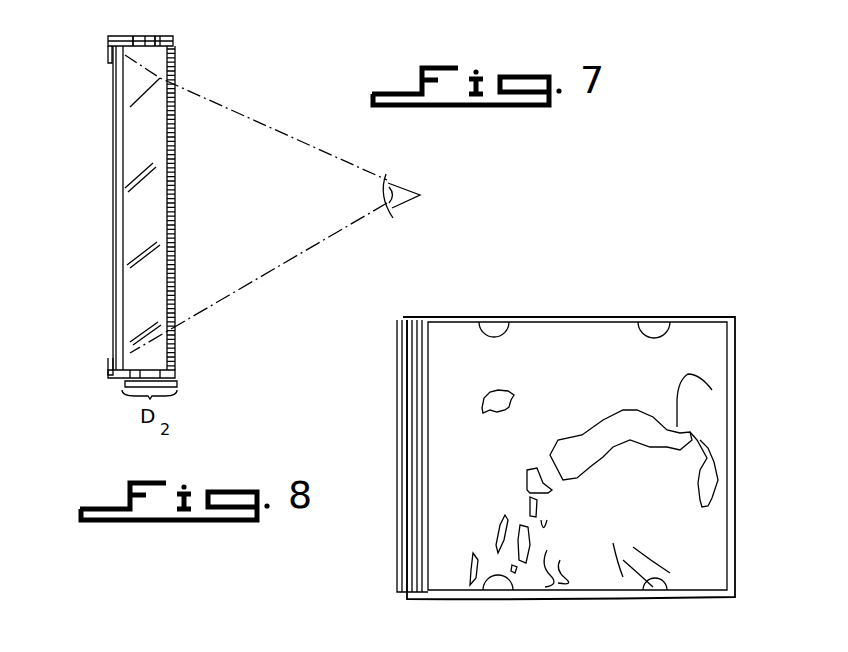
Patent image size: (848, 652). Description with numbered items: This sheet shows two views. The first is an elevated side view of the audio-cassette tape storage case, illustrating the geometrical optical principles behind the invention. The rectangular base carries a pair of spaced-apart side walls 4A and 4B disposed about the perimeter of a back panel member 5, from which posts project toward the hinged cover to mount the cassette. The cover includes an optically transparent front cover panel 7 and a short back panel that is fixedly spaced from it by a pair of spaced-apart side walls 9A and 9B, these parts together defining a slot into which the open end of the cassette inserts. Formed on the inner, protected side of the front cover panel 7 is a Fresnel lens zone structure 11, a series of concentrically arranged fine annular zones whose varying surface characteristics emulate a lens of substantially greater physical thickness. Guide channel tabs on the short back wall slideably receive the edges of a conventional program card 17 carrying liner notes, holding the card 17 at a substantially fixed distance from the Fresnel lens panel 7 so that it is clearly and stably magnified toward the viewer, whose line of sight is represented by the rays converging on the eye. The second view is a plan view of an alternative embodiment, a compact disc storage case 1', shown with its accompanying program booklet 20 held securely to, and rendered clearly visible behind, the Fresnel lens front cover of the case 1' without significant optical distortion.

In FIG. 7, the side wall 4A is at (173, 34).
In FIG. 7, the side wall 4B is at (125, 380).
In FIG. 7, the back panel member 5 is at (123, 86).
In FIG. 7, the optically transparent front cover panel 7 is at (186, 75).
In FIG. 7, the side wall 9A is at (133, 36).
In FIG. 7, the side wall 9B is at (177, 375).
In FIG. 7, the Fresnel lens zone structure 11 is at (177, 154).
In FIG. 7, the program card 17 is at (117, 200).
In FIG. 8, the compact disc storage case 1' is at (566, 416).
In FIG. 8, the program booklet 20 is at (657, 488).